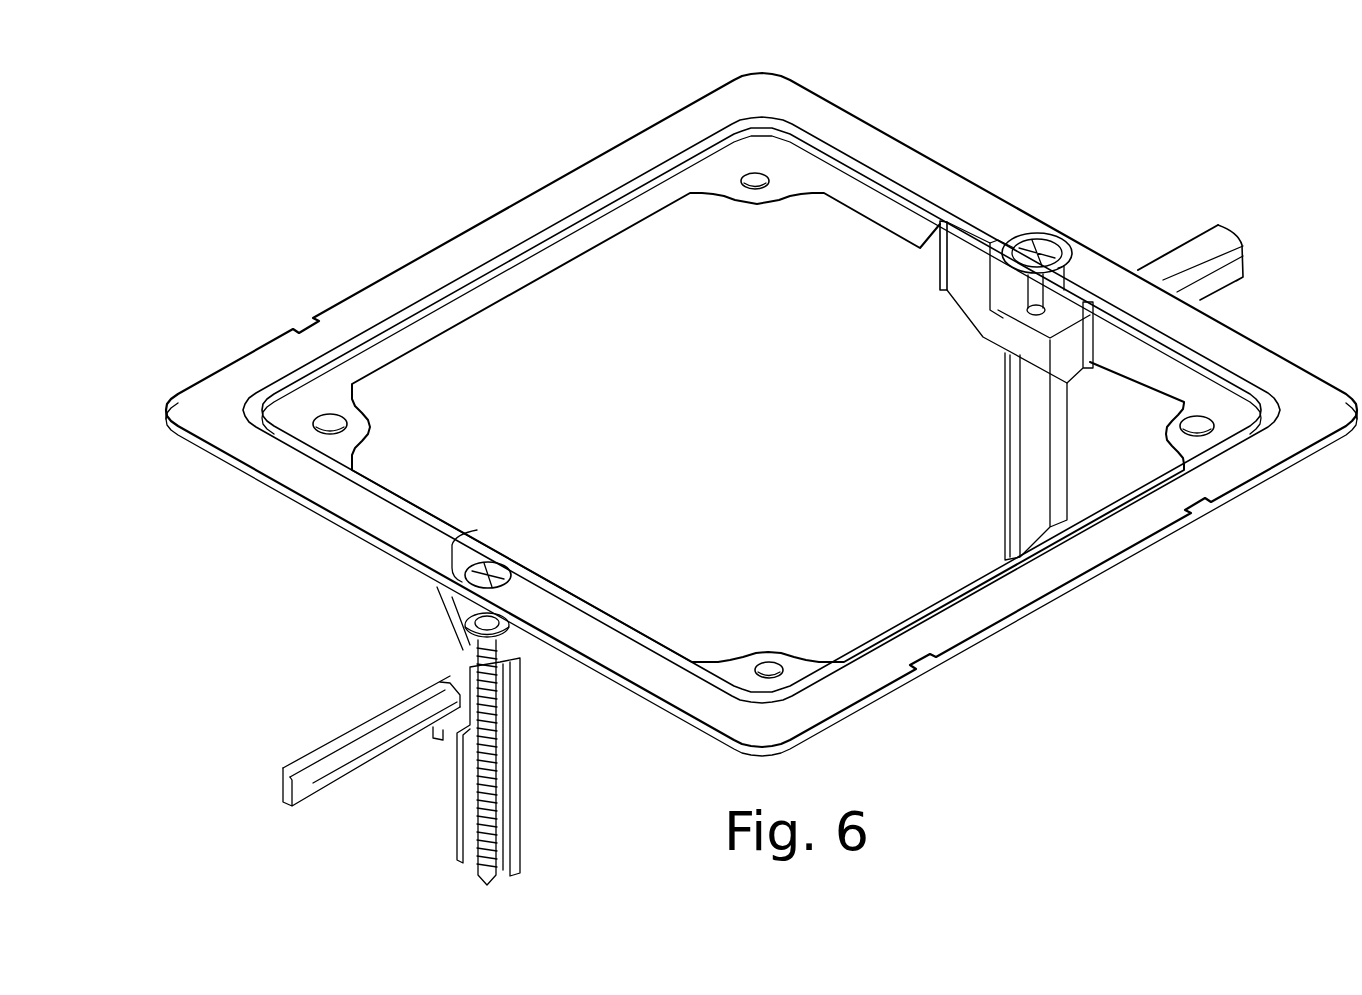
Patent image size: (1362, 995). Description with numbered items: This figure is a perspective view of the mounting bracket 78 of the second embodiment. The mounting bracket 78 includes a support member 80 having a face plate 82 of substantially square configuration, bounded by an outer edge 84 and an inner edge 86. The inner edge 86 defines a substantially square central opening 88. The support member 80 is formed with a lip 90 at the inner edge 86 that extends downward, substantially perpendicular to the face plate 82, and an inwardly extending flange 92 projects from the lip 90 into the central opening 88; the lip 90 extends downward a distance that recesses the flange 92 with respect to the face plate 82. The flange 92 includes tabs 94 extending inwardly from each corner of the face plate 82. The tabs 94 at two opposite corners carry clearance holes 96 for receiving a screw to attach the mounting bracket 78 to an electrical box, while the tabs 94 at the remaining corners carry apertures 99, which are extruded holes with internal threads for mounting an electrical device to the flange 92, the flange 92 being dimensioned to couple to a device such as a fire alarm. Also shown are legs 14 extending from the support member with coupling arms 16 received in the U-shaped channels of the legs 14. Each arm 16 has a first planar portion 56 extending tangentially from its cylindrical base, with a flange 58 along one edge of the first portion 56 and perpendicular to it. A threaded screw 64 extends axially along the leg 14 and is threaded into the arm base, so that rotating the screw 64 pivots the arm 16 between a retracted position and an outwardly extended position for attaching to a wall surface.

The leg 14 is at (1000, 452).
The coupling arm 16 is at (1224, 218).
The first planar portion 56 is at (1225, 280).
The flange 58 is at (1173, 257).
The threaded screw 64 is at (500, 560).
The mounting bracket 78 is at (952, 145).
The support member 80 is at (982, 202).
The face plate 82 is at (866, 135).
The outer edge 84 is at (820, 93).
The inner edge 86 is at (690, 140).
The central opening 88 is at (629, 303).
The lip 90 is at (908, 232).
The inwardly extending flange 92 is at (860, 203).
The tab 94 is at (793, 176).
The clearance hole 96 is at (350, 425).
The aperture 99 is at (742, 190).